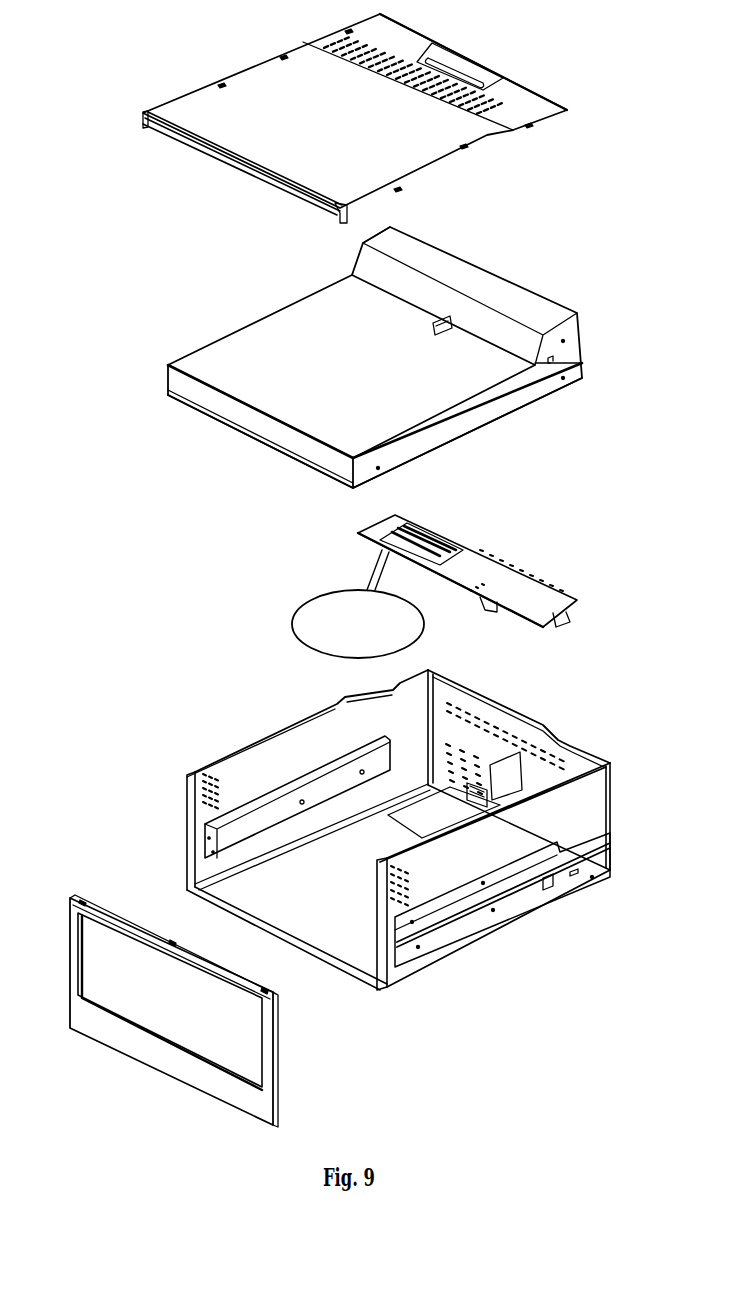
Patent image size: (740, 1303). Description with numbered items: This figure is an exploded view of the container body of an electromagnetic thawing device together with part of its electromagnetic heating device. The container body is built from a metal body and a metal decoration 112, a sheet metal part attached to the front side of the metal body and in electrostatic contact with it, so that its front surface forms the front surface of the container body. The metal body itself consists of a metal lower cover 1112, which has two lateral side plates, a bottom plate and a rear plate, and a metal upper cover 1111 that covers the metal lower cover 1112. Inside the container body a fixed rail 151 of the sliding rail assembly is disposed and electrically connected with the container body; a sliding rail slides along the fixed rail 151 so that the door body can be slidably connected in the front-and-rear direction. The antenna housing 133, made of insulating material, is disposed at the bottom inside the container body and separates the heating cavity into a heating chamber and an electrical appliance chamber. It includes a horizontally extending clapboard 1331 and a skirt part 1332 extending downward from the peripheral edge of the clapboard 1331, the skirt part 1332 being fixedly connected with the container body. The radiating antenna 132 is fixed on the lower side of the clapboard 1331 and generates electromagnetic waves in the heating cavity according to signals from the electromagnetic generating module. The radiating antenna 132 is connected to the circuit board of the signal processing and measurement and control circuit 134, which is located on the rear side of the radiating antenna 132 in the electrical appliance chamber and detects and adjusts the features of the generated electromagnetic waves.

The metal upper cover 1111 is at (270, 155).
The metal lower cover 1112 is at (411, 826).
The metal decoration 112 is at (72, 887).
The radiating antenna 132 is at (303, 627).
The antenna housing 133 is at (348, 374).
The clapboard 1331 is at (293, 320).
The skirt part 1332 is at (293, 440).
The signal processing and measurement and control circuit 134 is at (514, 559).
The fixed rail 151 is at (260, 813).